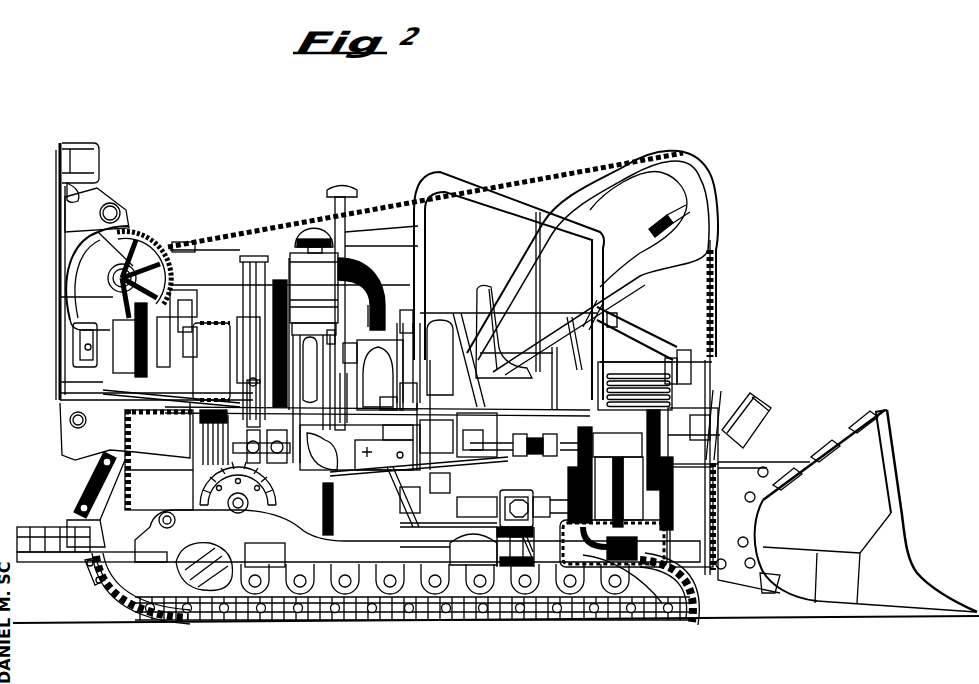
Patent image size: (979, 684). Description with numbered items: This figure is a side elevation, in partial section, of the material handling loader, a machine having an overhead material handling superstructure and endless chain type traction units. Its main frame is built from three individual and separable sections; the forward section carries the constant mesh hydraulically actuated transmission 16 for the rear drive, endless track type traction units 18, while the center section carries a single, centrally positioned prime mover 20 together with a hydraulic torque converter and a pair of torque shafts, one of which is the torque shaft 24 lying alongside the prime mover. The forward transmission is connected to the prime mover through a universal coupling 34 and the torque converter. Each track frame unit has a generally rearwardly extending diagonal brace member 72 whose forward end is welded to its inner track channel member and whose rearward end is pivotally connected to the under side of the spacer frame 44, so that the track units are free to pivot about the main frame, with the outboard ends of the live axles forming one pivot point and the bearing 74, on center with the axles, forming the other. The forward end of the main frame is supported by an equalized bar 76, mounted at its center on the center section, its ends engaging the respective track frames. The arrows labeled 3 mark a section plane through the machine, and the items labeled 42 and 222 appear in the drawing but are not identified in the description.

The constant mesh hydraulically actuated transmission 16 is at (690, 573).
The endless track type traction units 18 is at (442, 620).
The prime mover 20 is at (430, 310).
The torque shaft 24 is at (503, 493).
The universal coupling 34 is at (530, 444).
The radiator 42 is at (267, 257).
The spacer frame 44 is at (137, 497).
The diagonal brace member 72 is at (337, 562).
The bearing 74 is at (97, 573).
The equalized bar 76 is at (520, 547).
The control rod 222 is at (472, 400).
The section line 3- 3 is at (63, 441).